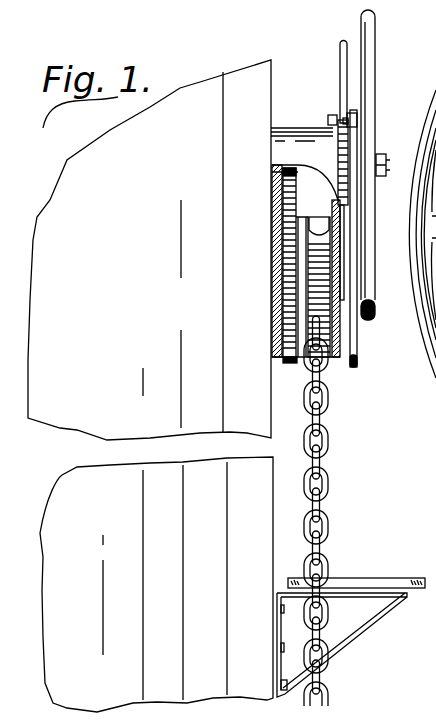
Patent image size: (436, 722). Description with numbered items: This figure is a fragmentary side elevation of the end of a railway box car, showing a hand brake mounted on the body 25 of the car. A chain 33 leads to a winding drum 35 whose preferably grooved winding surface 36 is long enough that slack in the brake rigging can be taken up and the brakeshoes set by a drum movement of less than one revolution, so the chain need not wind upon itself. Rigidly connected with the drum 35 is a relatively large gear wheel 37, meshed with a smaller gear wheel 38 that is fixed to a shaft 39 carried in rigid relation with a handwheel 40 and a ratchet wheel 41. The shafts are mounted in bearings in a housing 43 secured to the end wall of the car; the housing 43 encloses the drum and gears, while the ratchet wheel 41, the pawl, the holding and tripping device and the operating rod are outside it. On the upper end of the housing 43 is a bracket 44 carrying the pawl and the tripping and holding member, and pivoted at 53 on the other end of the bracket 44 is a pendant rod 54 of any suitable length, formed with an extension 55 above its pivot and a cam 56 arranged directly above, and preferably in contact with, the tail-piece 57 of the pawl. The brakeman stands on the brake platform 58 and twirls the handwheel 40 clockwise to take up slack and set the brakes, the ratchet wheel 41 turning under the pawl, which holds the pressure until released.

The body of a railway box car 25 is at (270, 110).
The chain 33 is at (326, 672).
The winding drum 35 is at (328, 318).
The winding surface 36 is at (328, 325).
The large gear wheel 37 is at (293, 363).
The smaller gear wheel 38 is at (292, 167).
The shaft 39 is at (383, 158).
The handwheel 40 is at (352, 117).
The ratchet wheel 41 is at (355, 142).
The housing 43 is at (340, 235).
The bracket 44 is at (336, 117).
The pivot 53 is at (357, 117).
The pendant rod 54 is at (362, 300).
The extension 55 is at (343, 37).
The cam 56 is at (358, 113).
The tail-piece 57 is at (343, 138).
The brake platform 58 is at (377, 572).